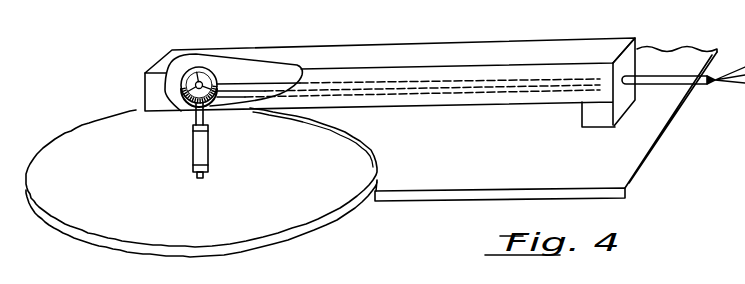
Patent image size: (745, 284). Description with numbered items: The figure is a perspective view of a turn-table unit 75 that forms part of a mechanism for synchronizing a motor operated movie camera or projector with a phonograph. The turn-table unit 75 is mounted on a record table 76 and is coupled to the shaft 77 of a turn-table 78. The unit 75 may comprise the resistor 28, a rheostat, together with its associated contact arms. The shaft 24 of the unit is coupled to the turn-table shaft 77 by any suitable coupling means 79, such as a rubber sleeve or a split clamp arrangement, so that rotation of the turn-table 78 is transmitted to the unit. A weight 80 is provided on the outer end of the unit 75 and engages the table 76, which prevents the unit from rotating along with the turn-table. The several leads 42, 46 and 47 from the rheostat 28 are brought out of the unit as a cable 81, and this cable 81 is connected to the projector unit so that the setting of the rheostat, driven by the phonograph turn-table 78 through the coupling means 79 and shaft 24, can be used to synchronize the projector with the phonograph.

The turn-table unit 75 is at (403, 46).
The weight 80 is at (596, 127).
The resistor 28 is at (199, 78).
The lead 46 is at (257, 84).
The lead 42 is at (266, 91).
The lead 47 is at (242, 101).
The shaft 24 is at (196, 117).
The coupling means 79 is at (192, 135).
The shaft of turn-table 77 is at (196, 178).
The cable 81 is at (676, 70).
The record table 76 is at (412, 191).
The turn-table 78 is at (277, 235).